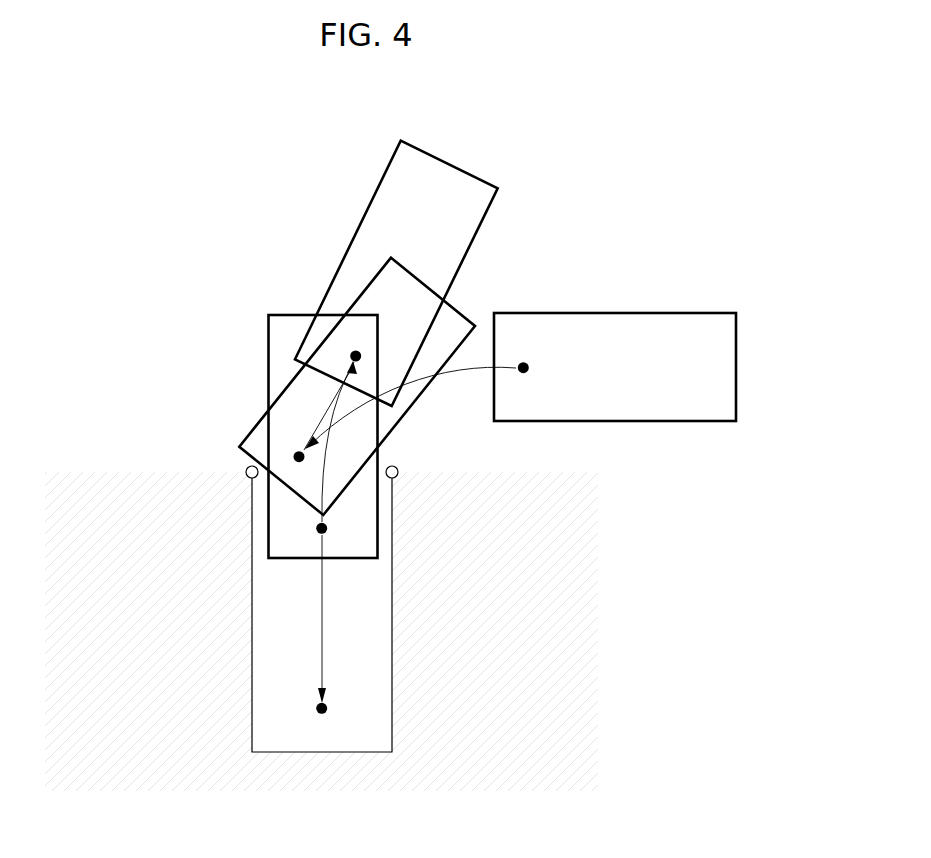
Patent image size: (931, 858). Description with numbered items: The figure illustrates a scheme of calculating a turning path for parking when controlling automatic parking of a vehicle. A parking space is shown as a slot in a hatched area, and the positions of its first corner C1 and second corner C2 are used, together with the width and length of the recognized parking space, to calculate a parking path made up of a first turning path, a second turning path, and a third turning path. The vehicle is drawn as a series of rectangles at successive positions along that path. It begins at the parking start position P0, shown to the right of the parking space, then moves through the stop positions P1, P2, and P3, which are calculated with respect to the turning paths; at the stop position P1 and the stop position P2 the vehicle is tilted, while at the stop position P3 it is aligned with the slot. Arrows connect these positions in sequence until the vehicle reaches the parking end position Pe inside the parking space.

The parking start position P0 is at (536, 372).
The stop position P1 is at (291, 443).
The stop position P2 is at (355, 345).
The stop position P3 is at (334, 533).
The parking end position Pe is at (333, 712).
The first corner C1 is at (234, 487).
The second corner C2 is at (408, 487).